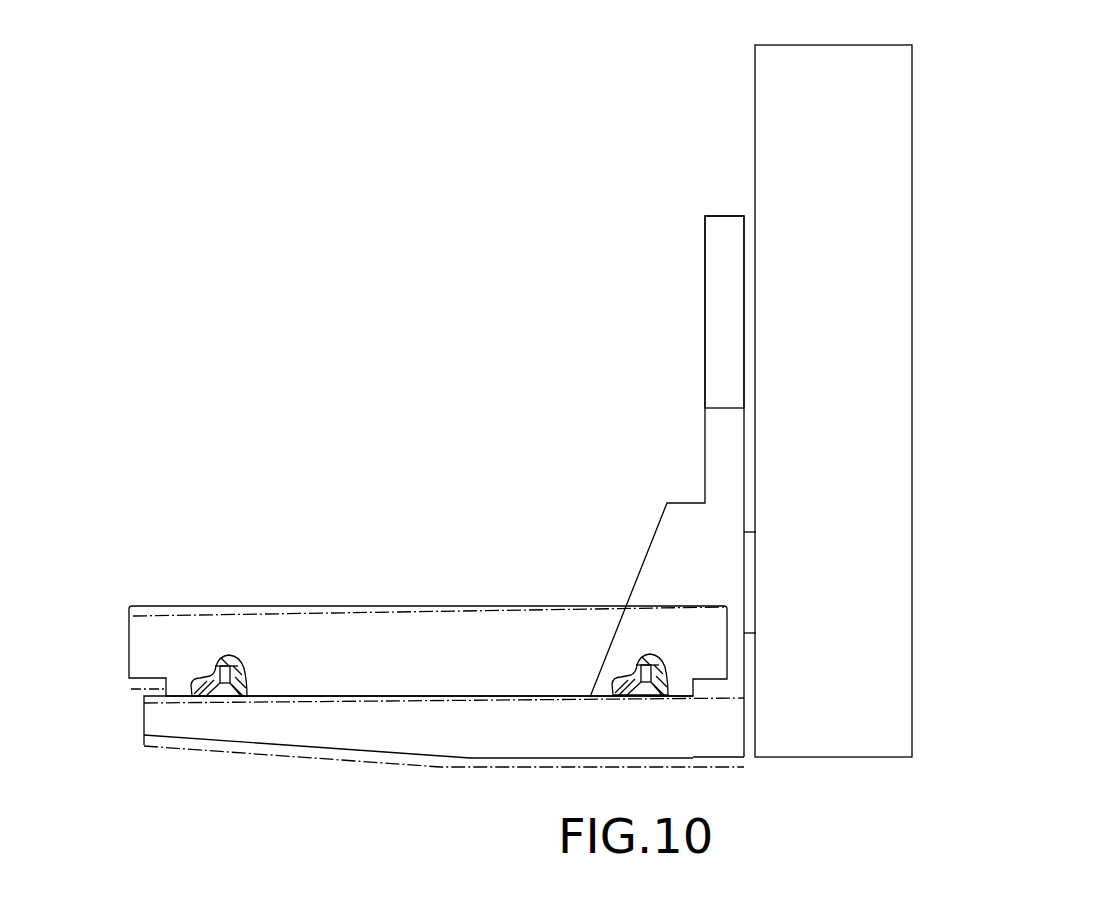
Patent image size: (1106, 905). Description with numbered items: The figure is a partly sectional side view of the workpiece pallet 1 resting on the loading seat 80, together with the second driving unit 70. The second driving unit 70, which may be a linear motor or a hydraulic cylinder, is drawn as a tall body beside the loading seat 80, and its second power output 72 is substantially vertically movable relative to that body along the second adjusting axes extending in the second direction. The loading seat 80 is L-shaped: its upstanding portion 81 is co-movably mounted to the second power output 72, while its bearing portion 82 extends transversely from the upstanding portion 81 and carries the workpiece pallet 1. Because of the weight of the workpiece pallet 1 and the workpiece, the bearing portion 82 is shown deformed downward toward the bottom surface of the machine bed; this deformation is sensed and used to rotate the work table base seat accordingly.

The workpiece pallet 1 is at (158, 617).
The second driving unit 70 is at (913, 273).
The second power output 72 is at (750, 583).
The loading seat 80 is at (658, 518).
The upstanding portion 81 is at (717, 368).
The bearing portion 82 is at (237, 740).